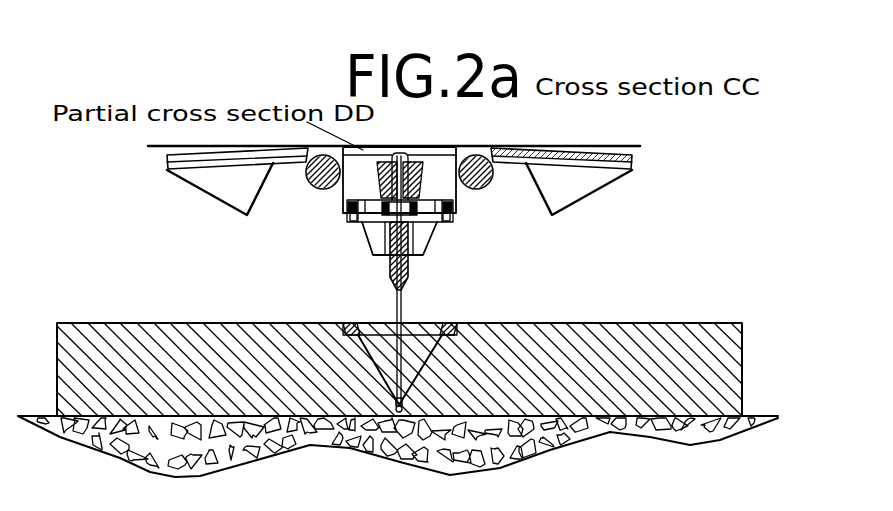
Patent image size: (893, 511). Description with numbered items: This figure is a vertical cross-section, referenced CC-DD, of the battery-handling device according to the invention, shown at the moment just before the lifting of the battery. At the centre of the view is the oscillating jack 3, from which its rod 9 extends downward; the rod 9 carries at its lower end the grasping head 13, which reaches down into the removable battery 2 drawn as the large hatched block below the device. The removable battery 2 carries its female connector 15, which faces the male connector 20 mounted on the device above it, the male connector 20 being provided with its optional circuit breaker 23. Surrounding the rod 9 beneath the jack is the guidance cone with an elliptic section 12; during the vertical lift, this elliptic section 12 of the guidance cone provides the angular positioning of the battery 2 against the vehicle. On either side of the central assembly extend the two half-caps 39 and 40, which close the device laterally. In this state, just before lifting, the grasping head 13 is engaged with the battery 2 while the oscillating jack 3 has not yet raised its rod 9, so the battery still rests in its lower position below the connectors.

The removable battery 2 is at (93, 337).
The oscillating jack 3 is at (355, 222).
The rod 9 is at (402, 328).
The guidance cone with an elliptic section 12 is at (435, 233).
The grasping head 13 is at (395, 398).
The female connector 15 is at (467, 322).
The male connector 20 is at (447, 221).
The circuit breaker 23 is at (450, 218).
The half-cap 39 is at (595, 177).
The half-cap 40 is at (221, 180).